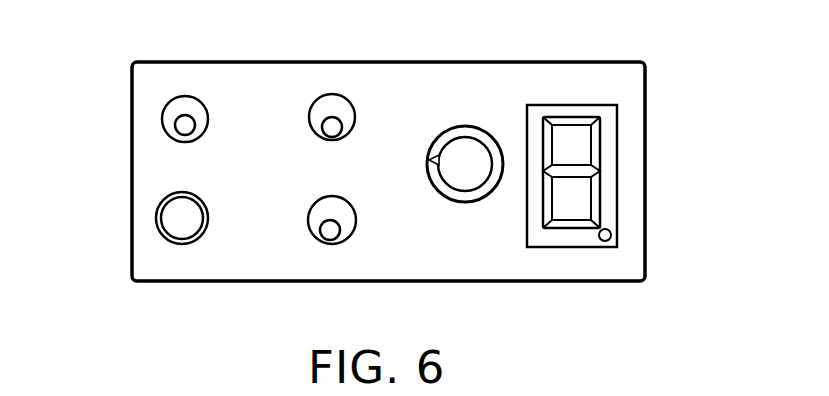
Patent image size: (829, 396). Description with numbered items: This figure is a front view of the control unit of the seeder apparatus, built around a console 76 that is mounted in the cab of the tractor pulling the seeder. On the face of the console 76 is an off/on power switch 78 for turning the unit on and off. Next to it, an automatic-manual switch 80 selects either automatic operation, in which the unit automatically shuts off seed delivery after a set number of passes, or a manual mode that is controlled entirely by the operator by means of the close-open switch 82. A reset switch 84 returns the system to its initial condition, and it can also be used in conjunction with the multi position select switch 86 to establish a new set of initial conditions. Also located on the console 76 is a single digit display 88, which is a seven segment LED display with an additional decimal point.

The console 76 is at (647, 159).
The off/on power switch 78 is at (163, 118).
The automatic-manual switch 80 is at (310, 115).
The close-open switch 82 is at (309, 227).
The reset switch 84 is at (156, 216).
The multi position select switch 86 is at (457, 202).
The single digit display 88 is at (578, 245).